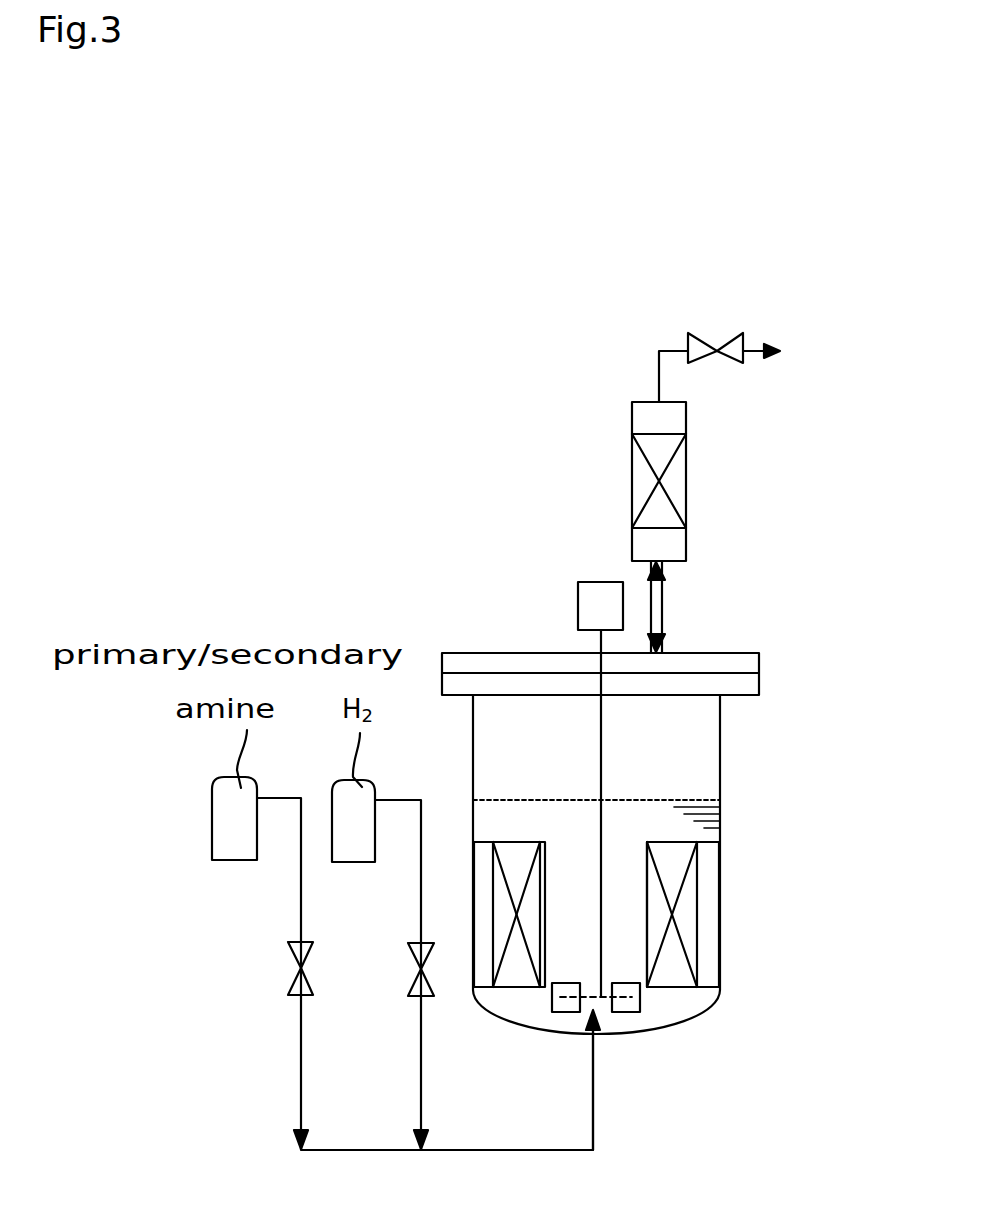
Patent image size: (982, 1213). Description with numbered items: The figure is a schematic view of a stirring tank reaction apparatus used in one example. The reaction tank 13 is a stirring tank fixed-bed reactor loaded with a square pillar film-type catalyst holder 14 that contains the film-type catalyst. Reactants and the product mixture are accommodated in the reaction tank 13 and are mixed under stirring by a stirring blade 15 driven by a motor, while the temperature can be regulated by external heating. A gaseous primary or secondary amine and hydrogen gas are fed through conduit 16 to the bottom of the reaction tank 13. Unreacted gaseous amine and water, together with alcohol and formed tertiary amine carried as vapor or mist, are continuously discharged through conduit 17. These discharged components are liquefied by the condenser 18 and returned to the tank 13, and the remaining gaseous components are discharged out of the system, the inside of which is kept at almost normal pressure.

The reaction tank 13 is at (720, 775).
The square pillar film-type catalyst holder 14 is at (695, 915).
The stirring blade 15 is at (640, 1003).
The conduit 16 is at (592, 1132).
The conduit 17 is at (662, 608).
The condenser 18 is at (686, 466).